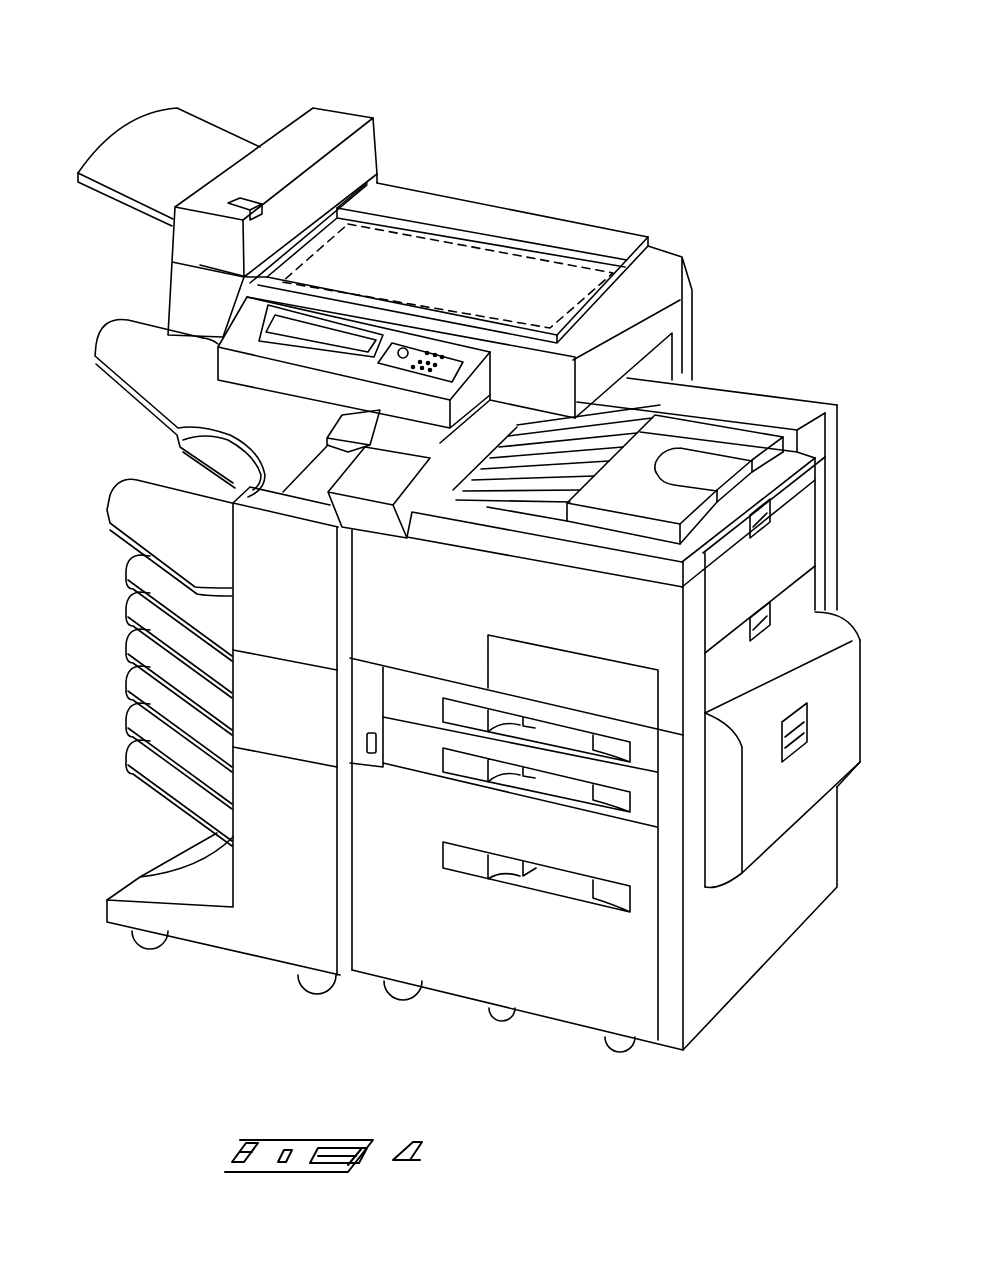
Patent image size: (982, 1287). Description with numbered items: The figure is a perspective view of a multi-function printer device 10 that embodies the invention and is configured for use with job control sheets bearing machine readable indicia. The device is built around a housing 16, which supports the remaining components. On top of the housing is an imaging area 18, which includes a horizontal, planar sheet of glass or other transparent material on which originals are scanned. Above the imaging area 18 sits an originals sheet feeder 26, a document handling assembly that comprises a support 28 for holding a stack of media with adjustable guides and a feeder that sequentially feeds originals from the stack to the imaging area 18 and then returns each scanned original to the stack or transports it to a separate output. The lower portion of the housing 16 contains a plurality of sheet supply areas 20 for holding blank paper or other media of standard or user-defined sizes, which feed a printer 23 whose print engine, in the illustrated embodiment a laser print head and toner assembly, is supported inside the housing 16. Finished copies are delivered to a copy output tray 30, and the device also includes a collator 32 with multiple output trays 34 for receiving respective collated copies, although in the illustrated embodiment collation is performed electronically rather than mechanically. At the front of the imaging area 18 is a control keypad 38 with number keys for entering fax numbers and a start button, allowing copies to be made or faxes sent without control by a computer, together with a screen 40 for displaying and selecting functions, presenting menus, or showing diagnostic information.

The multi-function printer device 10 is at (600, 127).
The housing 16 is at (758, 968).
The imaging area 18 is at (417, 262).
The sheet supply areas 20 is at (798, 598).
The printer 23 is at (765, 386).
The originals sheet feeder 26 is at (197, 107).
The support 28 is at (158, 130).
The copy output tray 30 is at (132, 498).
The collator 32 is at (114, 712).
The multiple output trays 34 is at (132, 572).
The control keypad 38 is at (450, 362).
The screen 40 is at (297, 338).